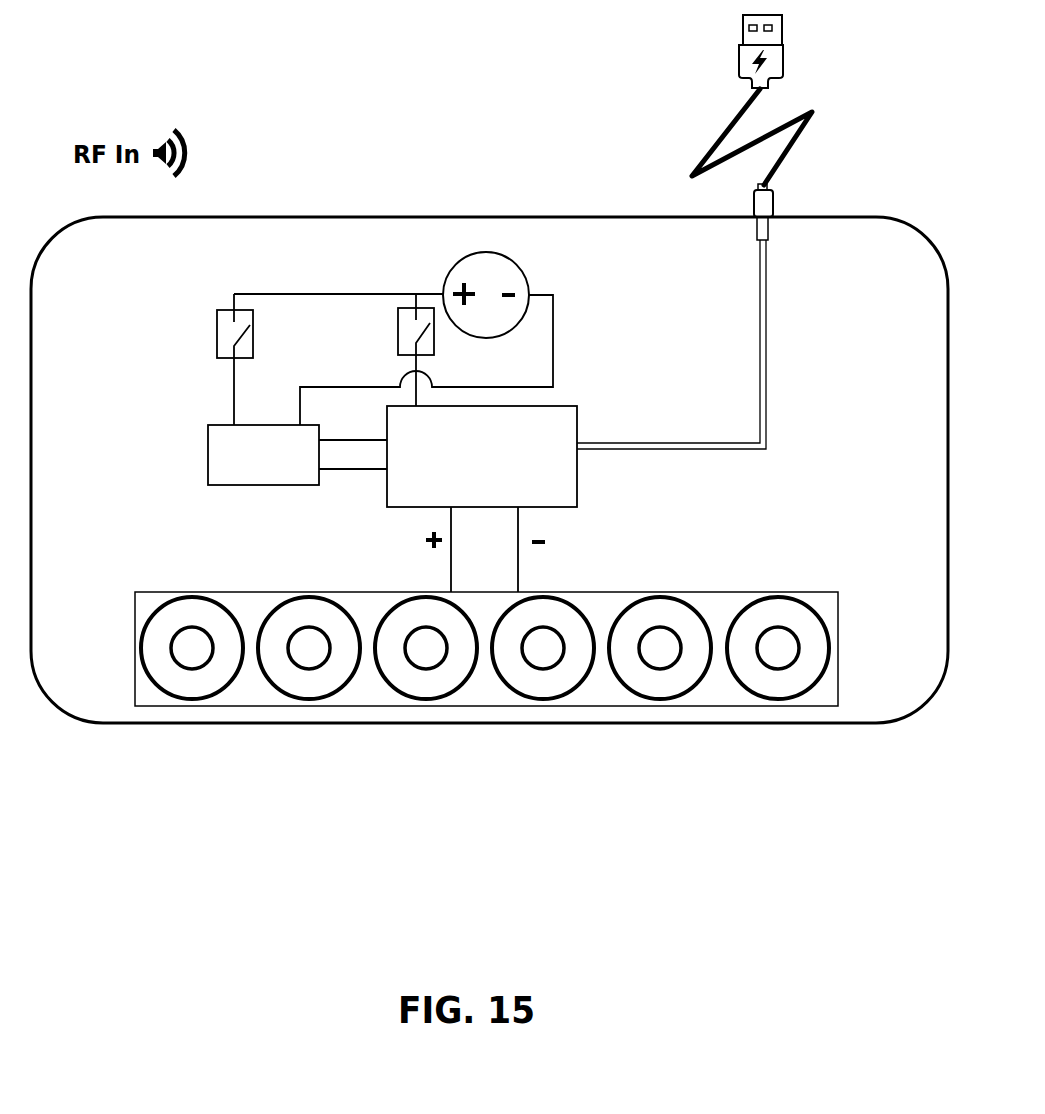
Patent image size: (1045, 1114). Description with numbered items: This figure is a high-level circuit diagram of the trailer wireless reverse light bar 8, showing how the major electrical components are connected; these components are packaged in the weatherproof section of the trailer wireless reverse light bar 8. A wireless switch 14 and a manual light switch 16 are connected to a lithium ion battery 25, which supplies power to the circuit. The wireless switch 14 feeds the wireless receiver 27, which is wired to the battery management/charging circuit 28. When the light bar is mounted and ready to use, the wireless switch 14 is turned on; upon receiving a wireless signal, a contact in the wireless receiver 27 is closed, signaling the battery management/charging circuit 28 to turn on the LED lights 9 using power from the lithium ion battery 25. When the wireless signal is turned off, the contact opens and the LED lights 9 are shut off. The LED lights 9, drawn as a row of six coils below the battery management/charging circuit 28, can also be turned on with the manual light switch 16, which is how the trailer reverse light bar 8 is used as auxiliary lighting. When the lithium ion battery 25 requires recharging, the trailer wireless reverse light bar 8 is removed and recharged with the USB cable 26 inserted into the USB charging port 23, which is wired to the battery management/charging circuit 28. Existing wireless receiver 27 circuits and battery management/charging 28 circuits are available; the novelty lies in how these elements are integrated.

The trailer wireless reverse light bar 8 is at (95, 727).
The LED lights 9 is at (218, 690).
The wireless switch 14 is at (217, 337).
The manual light switch 16 is at (398, 338).
The USB charging port 23 is at (775, 213).
The lithium ion battery 25 is at (527, 280).
The USB cable 26 is at (813, 113).
The wireless receiver 27 is at (262, 487).
The battery management/charging circuit 28 is at (410, 508).